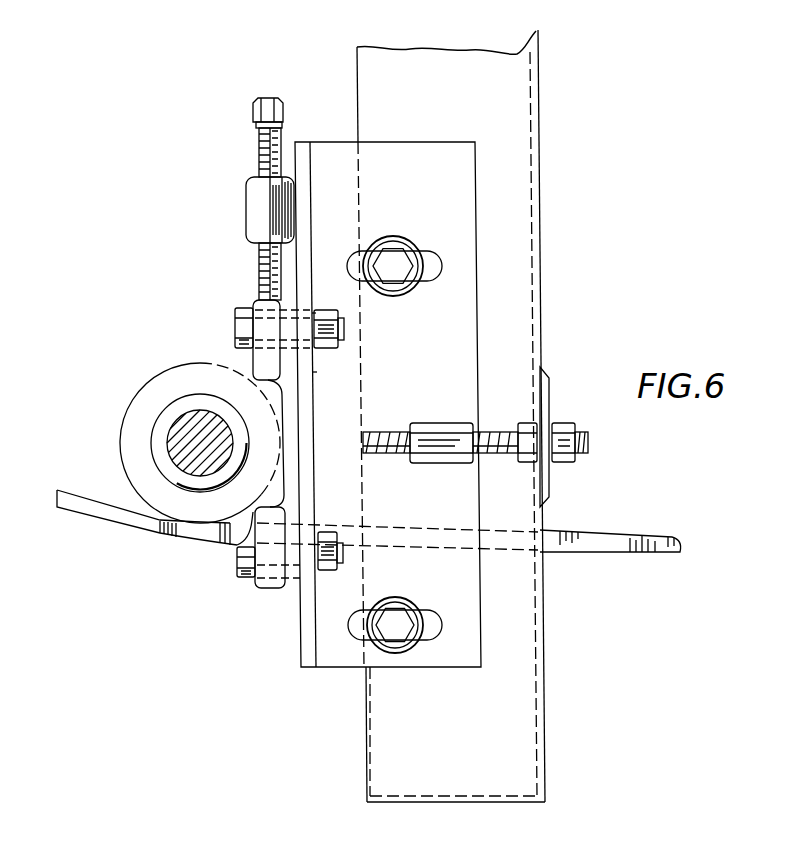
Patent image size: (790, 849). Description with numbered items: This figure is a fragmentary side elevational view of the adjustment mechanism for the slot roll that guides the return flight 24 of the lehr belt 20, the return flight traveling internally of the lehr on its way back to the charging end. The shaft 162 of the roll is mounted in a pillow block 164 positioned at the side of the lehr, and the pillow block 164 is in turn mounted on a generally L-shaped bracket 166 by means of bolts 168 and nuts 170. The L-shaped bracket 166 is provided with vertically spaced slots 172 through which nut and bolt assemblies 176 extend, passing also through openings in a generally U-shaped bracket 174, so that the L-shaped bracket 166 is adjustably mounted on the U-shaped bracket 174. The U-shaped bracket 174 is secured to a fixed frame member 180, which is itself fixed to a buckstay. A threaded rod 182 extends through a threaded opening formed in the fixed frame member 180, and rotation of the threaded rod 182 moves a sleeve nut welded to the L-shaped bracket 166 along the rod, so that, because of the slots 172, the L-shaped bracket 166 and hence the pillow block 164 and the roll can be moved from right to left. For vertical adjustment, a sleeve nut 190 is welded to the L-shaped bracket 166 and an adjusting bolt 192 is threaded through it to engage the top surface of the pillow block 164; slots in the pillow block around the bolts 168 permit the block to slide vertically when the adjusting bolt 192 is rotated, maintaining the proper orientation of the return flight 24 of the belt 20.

The lehr belt 20 is at (137, 535).
The return flight 24 is at (97, 510).
The shaft 162 is at (178, 428).
The pillow block 164 is at (248, 520).
The L-shaped bracket 166 is at (337, 157).
The bolt 168 is at (252, 306).
The nut 170 is at (327, 309).
The slot 172 is at (428, 272).
The U-shaped bracket 174 is at (513, 112).
The nut and bolt assembly 176 is at (395, 262).
The fixed frame member 180 is at (547, 402).
The threaded rod 182 is at (490, 432).
The sleeve nut 190 is at (252, 210).
The adjusting bolt 192 is at (260, 143).